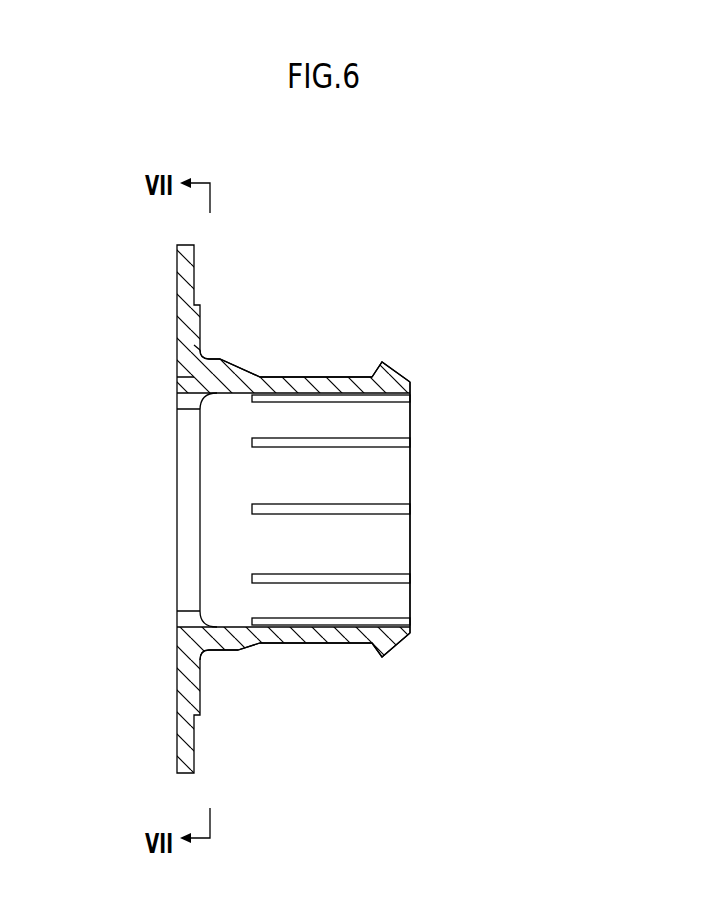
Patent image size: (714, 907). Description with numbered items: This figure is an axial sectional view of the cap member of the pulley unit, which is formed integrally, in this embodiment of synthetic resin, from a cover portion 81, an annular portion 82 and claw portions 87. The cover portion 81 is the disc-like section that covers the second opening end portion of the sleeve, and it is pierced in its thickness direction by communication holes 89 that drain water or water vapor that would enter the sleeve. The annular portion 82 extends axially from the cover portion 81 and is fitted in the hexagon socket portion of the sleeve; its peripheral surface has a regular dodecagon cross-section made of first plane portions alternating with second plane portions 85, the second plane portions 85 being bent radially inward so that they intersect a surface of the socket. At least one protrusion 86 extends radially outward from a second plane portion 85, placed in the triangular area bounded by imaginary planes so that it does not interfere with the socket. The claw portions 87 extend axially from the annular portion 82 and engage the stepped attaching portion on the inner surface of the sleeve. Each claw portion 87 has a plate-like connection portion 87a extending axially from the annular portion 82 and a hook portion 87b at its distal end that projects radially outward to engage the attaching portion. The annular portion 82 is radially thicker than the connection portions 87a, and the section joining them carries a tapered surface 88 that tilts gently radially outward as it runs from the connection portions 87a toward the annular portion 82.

The cover portion 81 is at (183, 325).
The annular portion 82 is at (183, 372).
The second plane portion 85 is at (220, 653).
The protrusion 86 is at (212, 357).
The claw portion 87 is at (335, 510).
The connection portion 87a is at (338, 383).
The hook portion 87b is at (390, 368).
The tapered surface 88 is at (240, 372).
The communication hole 89 is at (187, 400).